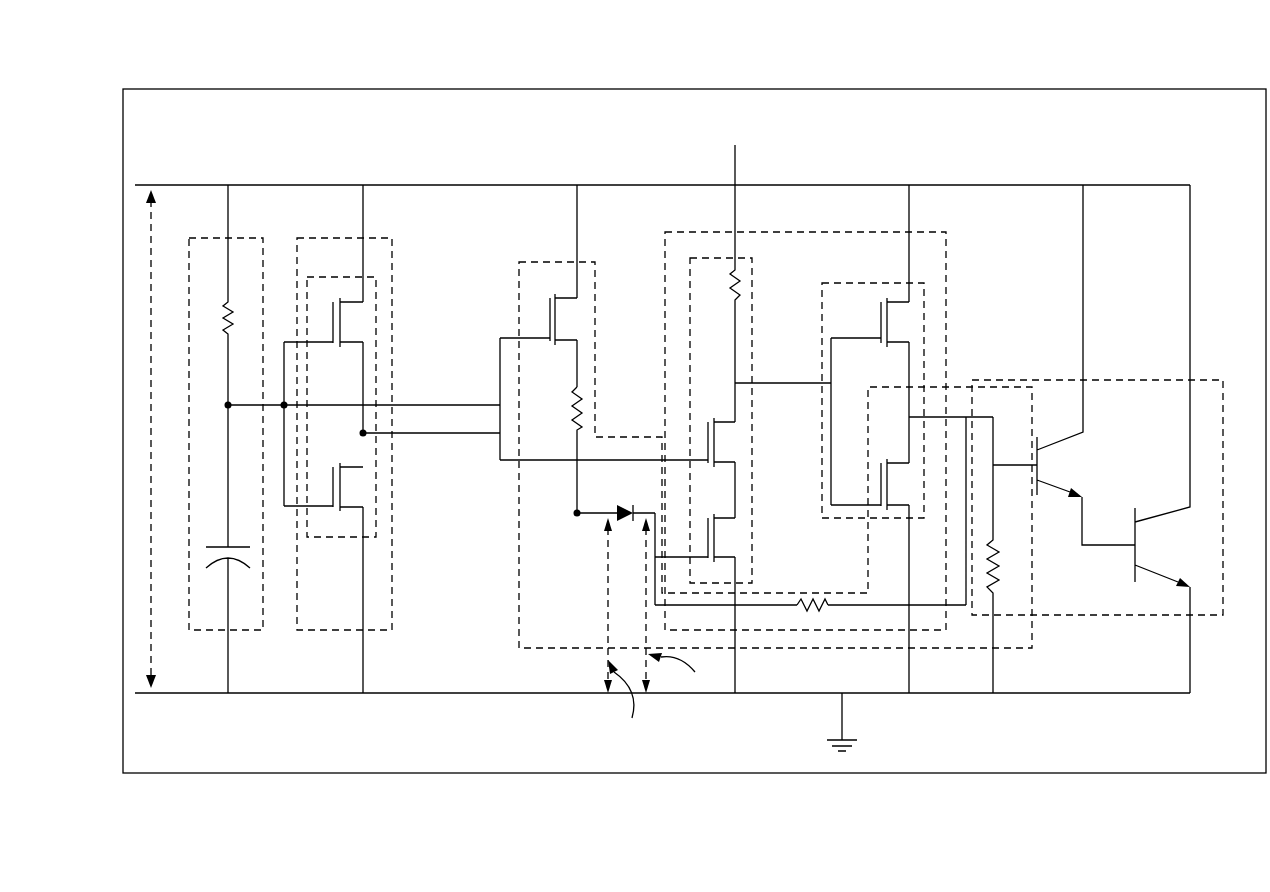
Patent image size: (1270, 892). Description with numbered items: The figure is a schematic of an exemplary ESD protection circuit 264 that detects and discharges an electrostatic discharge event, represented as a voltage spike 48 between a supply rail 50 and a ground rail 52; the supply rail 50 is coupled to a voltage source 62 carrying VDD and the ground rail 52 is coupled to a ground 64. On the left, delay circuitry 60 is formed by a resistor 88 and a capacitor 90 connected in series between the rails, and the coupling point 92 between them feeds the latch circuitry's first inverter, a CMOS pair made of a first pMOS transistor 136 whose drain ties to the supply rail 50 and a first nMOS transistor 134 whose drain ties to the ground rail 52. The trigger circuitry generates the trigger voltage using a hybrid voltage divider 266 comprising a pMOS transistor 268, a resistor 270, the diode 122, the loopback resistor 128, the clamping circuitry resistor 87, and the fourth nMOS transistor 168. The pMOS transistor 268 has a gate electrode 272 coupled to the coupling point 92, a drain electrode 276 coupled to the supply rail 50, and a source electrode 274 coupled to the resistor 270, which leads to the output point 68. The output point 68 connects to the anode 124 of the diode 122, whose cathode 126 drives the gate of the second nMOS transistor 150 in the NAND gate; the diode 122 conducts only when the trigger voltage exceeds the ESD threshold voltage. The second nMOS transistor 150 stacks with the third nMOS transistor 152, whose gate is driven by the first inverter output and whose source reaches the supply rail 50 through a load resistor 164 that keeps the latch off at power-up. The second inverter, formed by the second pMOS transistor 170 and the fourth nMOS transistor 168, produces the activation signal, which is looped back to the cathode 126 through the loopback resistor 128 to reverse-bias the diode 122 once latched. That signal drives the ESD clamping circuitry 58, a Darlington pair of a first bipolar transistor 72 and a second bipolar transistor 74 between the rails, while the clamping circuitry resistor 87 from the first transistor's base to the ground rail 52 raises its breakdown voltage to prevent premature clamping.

The ESD protection circuit 264 is at (1115, 89).
The supply rail 50 is at (198, 185).
The ground rail 52 is at (207, 693).
The voltage spike 48 is at (169, 231).
The delay circuitry 60 is at (243, 238).
The resistor 88 is at (228, 305).
The capacitor 90 is at (218, 547).
The coupling point 92 is at (217, 393).
The first pMOS transistor 136 is at (358, 314).
The first nMOS transistor 134 is at (358, 490).
The hybrid voltage divider 266 is at (595, 262).
The pMOS transistor 268 is at (573, 312).
The drain electrode 276 is at (568, 298).
The gate electrode 272 is at (500, 338).
The source electrode 274 is at (566, 345).
The resistor 270 is at (583, 392).
The output point 68 is at (563, 504).
The diode 122 is at (622, 518).
The anode 124 is at (608, 513).
The cathode 126 is at (646, 513).
The loopback resistor 128 is at (812, 603).
The clamping circuitry resistor 87 is at (1002, 578).
The load resistor 164 is at (742, 290).
The third nMOS transistor 152 is at (731, 442).
The second nMOS transistor 150 is at (731, 539).
The second pMOS transistor 170 is at (905, 314).
The fourth nMOS transistor 168 is at (901, 499).
The ESD clamping circuitry 58 is at (1218, 380).
The first bipolar transistor 72 is at (1040, 465).
The second bipolar transistor 74 is at (1138, 545).
The voltage source 62 is at (779, 127).
The ground 64 is at (878, 738).